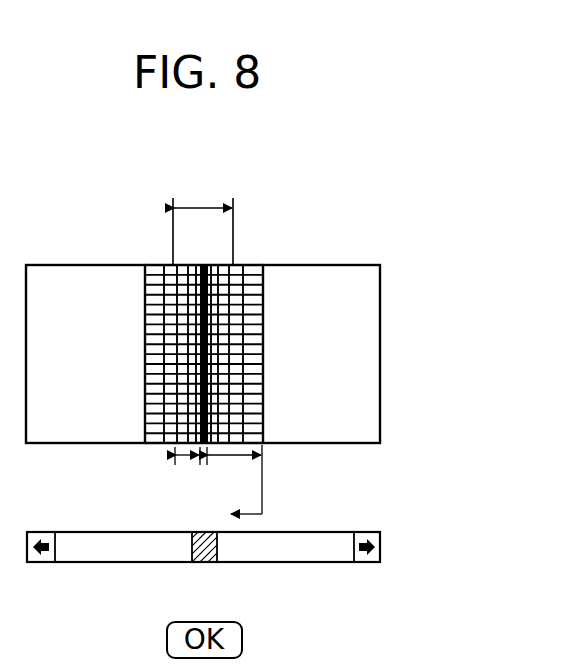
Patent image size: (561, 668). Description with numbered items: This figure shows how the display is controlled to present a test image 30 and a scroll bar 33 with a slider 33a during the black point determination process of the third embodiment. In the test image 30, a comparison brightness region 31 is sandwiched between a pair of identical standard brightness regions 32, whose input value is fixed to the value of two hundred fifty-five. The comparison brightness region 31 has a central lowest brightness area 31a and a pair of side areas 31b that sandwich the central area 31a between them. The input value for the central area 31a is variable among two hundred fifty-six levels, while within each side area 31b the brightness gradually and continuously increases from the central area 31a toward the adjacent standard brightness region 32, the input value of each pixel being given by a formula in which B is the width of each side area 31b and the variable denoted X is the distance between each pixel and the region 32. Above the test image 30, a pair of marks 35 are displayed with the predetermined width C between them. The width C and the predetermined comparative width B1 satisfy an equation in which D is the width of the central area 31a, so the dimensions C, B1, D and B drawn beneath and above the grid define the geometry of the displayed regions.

The test image 30 is at (409, 308).
The comparison brightness region 31 is at (262, 168).
The central lowest brightness area 31a is at (204, 267).
The side areas 31b is at (155, 272).
The standard brightness regions 32 is at (72, 268).
The marks 35 is at (167, 219).
The scroll bar 33 is at (152, 557).
The slider 33a is at (200, 562).
The predetermined width between marks C is at (203, 194).
The predetermined comparative width B1 is at (187, 463).
The width of central area D is at (203, 465).
The width of side area B is at (235, 479).
The direction X is at (237, 514).